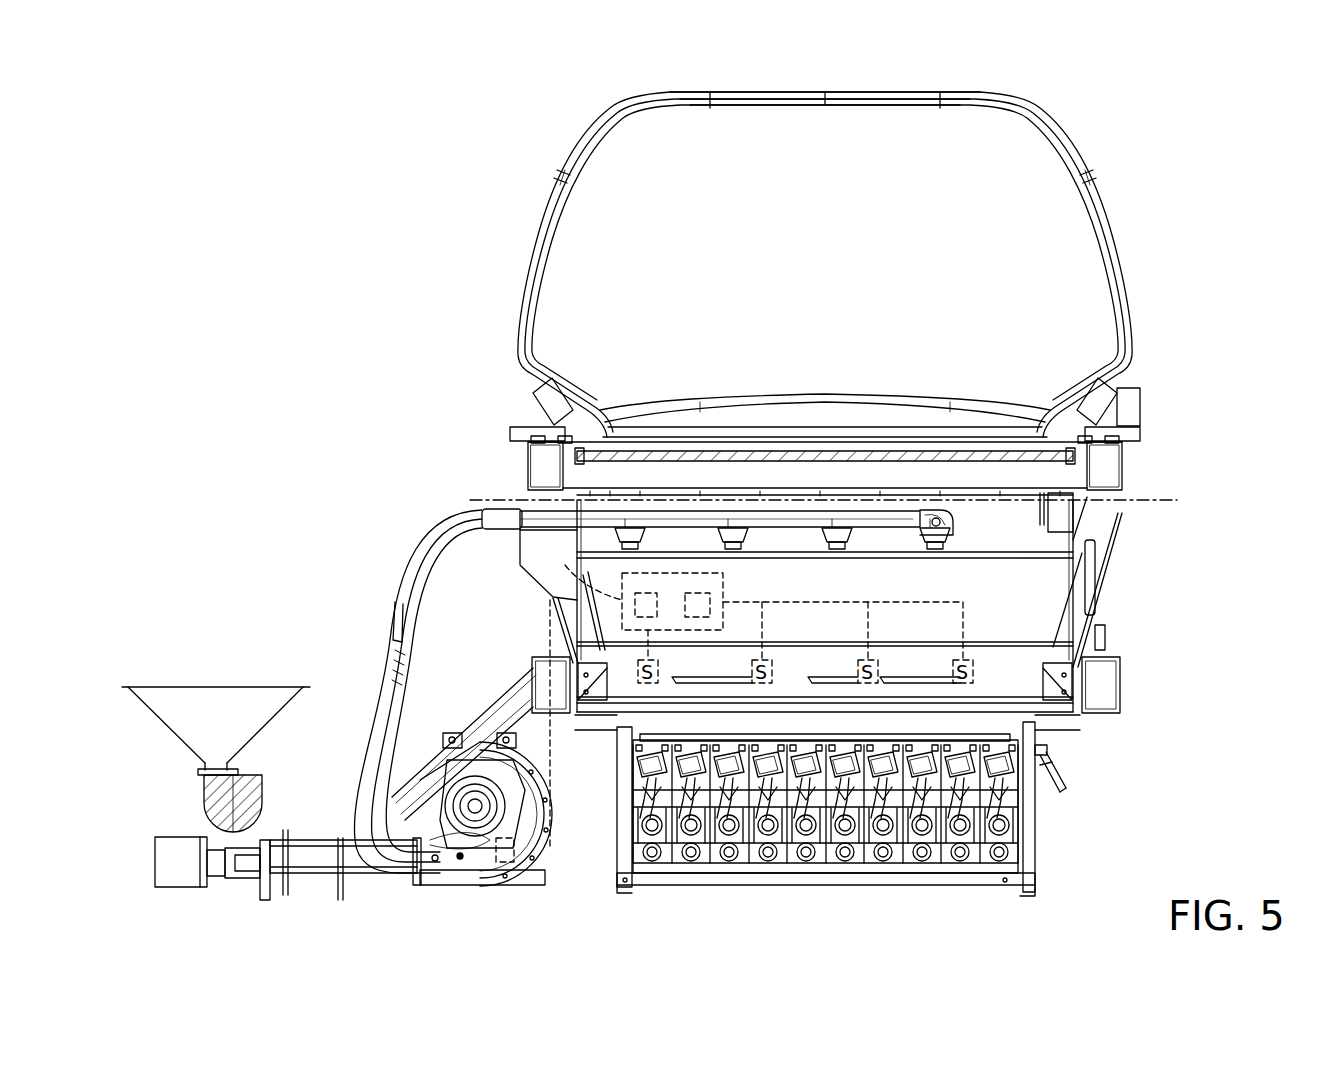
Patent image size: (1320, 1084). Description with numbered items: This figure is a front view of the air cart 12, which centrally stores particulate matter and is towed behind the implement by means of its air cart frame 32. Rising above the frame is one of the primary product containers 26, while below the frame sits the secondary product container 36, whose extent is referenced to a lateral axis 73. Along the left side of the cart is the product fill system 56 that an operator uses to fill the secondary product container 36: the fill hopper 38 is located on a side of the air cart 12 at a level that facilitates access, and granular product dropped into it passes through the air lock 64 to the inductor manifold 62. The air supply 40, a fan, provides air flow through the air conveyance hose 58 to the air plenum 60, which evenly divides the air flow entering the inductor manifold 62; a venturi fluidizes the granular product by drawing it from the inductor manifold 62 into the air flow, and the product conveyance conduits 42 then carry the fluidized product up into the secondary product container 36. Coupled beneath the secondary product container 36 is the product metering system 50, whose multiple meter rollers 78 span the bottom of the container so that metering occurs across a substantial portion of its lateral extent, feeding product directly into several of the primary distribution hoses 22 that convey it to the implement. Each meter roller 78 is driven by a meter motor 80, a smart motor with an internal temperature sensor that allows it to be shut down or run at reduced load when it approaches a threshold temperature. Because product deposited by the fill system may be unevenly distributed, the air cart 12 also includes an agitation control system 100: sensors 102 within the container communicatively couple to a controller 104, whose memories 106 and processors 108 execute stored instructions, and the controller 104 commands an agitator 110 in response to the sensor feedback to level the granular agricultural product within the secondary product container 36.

The air cart 12 is at (703, 78).
The primary product container 26 is at (1073, 140).
The air cart frame 32 is at (580, 468).
The secondary product container 36 is at (1035, 607).
The fill hopper 38 is at (215, 688).
The air supply 40 is at (485, 855).
The product conveyance conduits 42 is at (415, 577).
The product metering system 50 is at (1018, 768).
The product fill system 56 is at (336, 566).
The air conveyance hose 58 is at (315, 875).
The air plenum 60 is at (180, 862).
The inductor manifold 62 is at (250, 862).
The air lock 64 is at (222, 810).
The lateral axis 73 is at (1152, 500).
The meter rollers 78 is at (657, 740).
The meter motors 80 is at (662, 764).
The primary distribution hoses 22 is at (1020, 815).
The agitation control system 100 is at (513, 610).
The sensors 102 is at (660, 676).
The controller 104 is at (722, 598).
The memories 106 is at (725, 608).
The processors 108 is at (578, 568).
The agitator 110 is at (1148, 680).